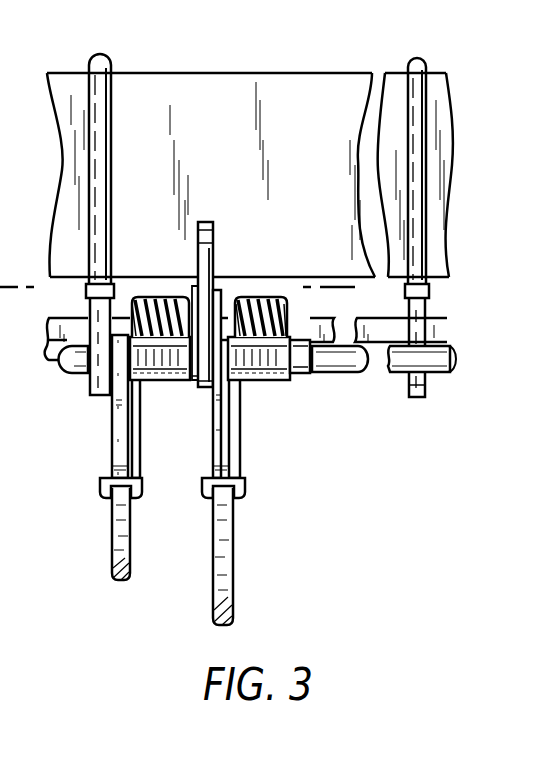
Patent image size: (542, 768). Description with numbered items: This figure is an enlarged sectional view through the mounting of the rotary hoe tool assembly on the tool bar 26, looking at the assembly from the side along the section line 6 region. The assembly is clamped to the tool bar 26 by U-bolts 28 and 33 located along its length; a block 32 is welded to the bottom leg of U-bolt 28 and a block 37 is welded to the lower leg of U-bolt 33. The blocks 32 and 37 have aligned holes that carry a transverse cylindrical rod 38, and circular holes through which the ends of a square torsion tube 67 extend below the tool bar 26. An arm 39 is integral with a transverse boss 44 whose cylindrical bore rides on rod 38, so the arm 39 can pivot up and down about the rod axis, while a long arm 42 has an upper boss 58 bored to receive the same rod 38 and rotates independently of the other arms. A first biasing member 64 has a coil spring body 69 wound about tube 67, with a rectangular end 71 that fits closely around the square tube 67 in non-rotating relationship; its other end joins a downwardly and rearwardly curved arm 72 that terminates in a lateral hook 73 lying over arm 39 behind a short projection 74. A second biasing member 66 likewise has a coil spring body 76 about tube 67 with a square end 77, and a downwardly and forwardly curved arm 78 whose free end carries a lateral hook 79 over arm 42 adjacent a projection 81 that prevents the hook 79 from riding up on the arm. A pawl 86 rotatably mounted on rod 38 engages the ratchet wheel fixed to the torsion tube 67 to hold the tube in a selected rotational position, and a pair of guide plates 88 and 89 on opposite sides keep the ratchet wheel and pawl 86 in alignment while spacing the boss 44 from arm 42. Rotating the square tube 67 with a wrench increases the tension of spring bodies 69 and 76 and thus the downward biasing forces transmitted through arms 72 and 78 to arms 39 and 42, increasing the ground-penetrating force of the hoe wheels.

The section line 6 is at (333, 272).
The tool bar 26 is at (276, 95).
The U-bolt 28 is at (102, 93).
The block 32 is at (100, 388).
The U-bolt 33 is at (415, 157).
The block 37 is at (422, 387).
The transverse rod 38 is at (343, 358).
The arm 39 is at (116, 542).
The long arm 42 is at (227, 550).
The transverse head or boss 44 is at (170, 381).
The transverse upper head or boss 58 is at (265, 360).
The first biasing member 64 is at (156, 272).
The second biasing member 66 is at (262, 273).
The torsion tube 67 is at (57, 332).
The coil spring body 69 is at (143, 291).
The end 71 is at (188, 298).
The arm 72 is at (141, 470).
The lateral hook 73 is at (103, 481).
The boss or projection 74 is at (118, 468).
The coil spring body 76 is at (244, 298).
The square end 77 is at (283, 298).
The arm 78 is at (244, 432).
The lateral hook 79 is at (210, 487).
The projection 81 is at (222, 467).
The pawl or lever 86 is at (206, 222).
The guide plate 88 is at (196, 383).
The guide plate 89 is at (212, 393).